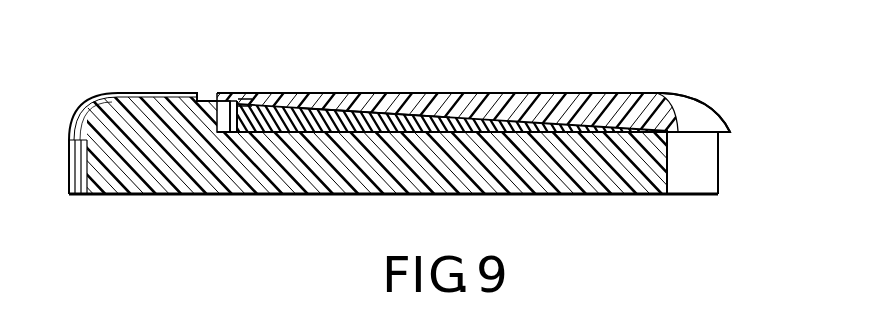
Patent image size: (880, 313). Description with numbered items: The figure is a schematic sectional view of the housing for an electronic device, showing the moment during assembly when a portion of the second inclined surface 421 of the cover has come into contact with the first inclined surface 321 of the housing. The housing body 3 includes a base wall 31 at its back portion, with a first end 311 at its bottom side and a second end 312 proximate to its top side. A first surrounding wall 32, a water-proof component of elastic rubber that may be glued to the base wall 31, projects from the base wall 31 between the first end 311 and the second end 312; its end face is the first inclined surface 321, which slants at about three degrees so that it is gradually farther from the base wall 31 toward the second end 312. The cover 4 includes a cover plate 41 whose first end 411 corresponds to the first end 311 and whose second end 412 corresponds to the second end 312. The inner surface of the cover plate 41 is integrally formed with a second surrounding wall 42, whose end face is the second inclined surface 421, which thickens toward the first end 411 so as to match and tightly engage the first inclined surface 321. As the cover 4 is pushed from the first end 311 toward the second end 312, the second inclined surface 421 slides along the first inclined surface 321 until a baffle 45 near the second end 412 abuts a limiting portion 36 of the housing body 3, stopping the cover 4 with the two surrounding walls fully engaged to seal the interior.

The housing body 3 is at (126, 201).
The base wall 31 is at (222, 133).
The first end 311 is at (721, 141).
The second end 312 is at (235, 140).
The first surrounding wall 32 is at (300, 112).
The first inclined surface 321 is at (378, 104).
The limiting portion 36 is at (215, 120).
The cover 4 is at (644, 82).
The cover plate 41 is at (567, 93).
The first end 411 is at (737, 120).
The second end 412 is at (228, 110).
The second surrounding wall 42 is at (452, 104).
The second inclined surface 421 is at (362, 110).
The baffle 45 is at (258, 96).